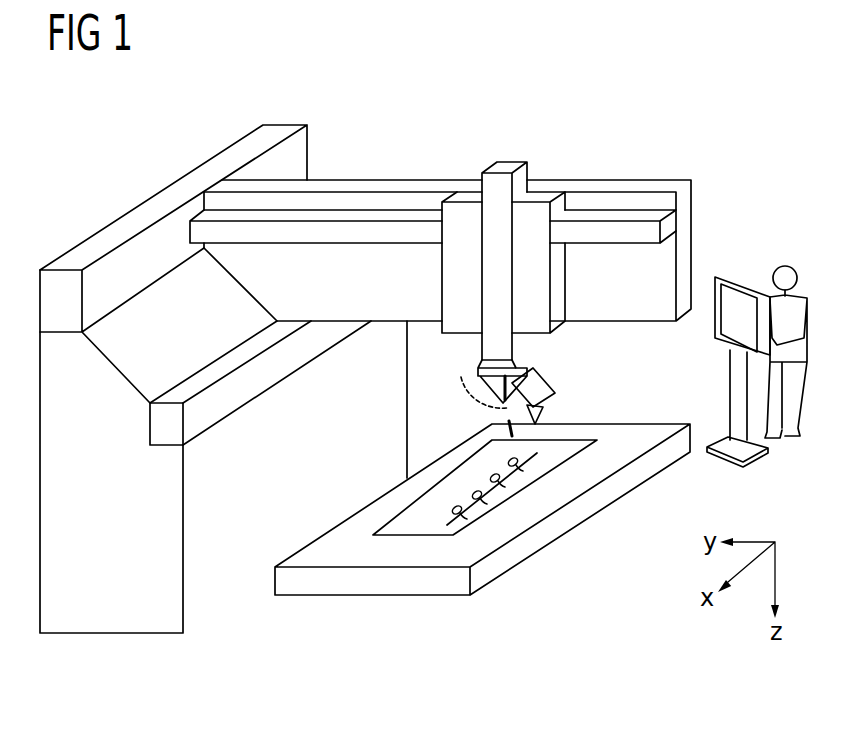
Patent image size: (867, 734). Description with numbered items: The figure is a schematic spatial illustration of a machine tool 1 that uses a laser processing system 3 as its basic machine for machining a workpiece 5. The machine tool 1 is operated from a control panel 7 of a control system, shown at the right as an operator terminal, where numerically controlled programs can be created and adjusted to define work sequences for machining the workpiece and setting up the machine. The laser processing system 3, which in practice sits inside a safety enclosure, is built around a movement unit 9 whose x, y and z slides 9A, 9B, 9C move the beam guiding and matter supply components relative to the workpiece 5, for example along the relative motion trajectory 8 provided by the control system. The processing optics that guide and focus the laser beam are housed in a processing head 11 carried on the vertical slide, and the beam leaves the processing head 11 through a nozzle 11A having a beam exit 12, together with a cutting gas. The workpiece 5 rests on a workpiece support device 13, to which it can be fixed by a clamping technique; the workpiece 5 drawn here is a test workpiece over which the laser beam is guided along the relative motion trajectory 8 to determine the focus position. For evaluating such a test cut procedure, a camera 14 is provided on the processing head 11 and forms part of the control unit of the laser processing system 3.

The machine tool 1 is at (487, 100).
The laser processing system 3 is at (649, 606).
The workpiece 5 is at (543, 467).
The control panel 7 is at (725, 332).
The relative motion trajectory 8 is at (512, 497).
The movement unit 9 is at (183, 132).
The x slide 9A is at (103, 234).
The y slide 9B is at (615, 148).
The z slide 9C is at (534, 278).
The processing head 11 is at (543, 376).
The nozzle 11A is at (545, 408).
The beam exit 12 is at (508, 436).
The workpiece support device 13 is at (655, 462).
The camera 14 is at (466, 380).